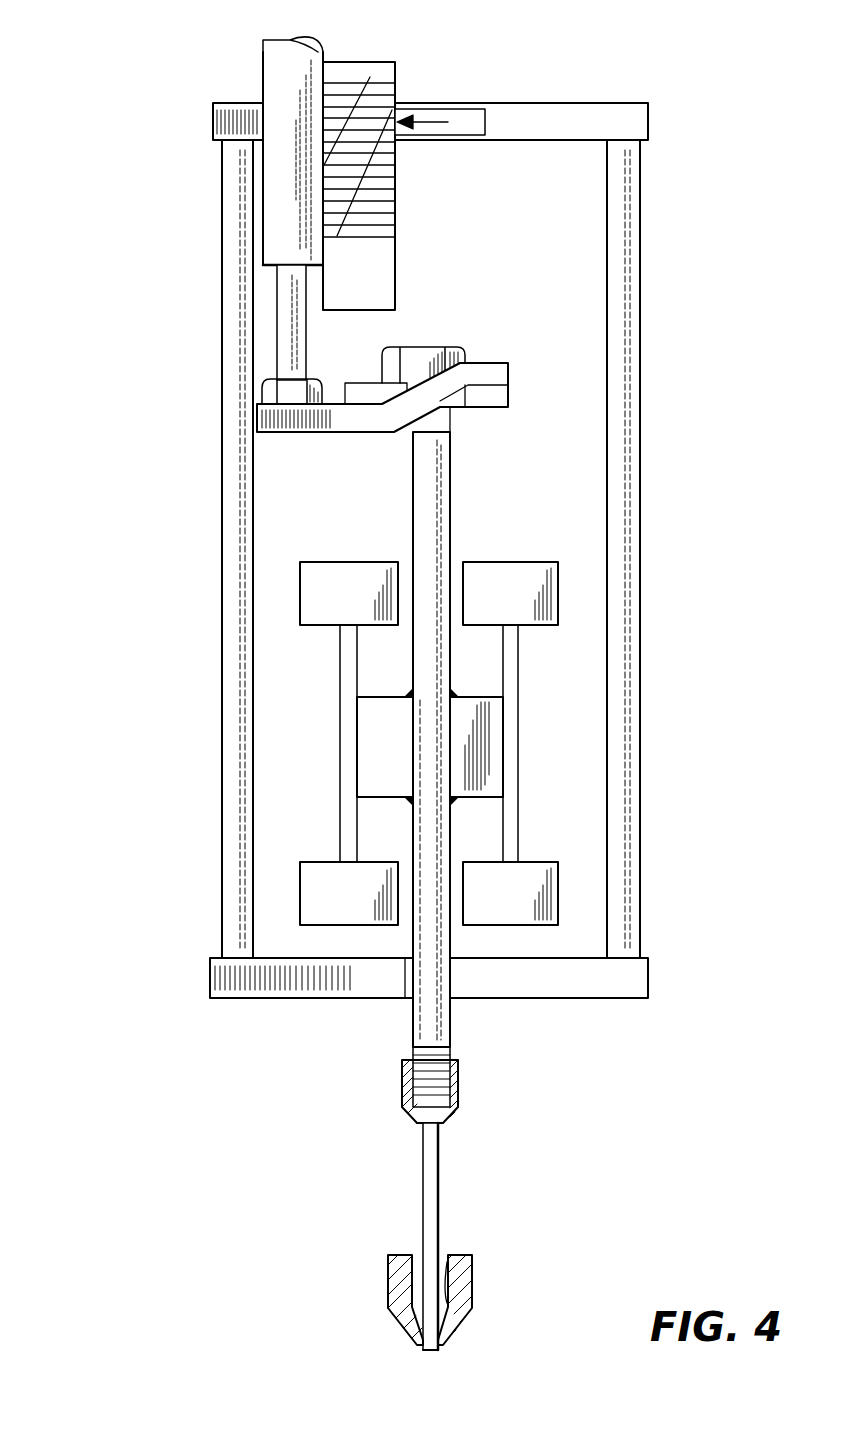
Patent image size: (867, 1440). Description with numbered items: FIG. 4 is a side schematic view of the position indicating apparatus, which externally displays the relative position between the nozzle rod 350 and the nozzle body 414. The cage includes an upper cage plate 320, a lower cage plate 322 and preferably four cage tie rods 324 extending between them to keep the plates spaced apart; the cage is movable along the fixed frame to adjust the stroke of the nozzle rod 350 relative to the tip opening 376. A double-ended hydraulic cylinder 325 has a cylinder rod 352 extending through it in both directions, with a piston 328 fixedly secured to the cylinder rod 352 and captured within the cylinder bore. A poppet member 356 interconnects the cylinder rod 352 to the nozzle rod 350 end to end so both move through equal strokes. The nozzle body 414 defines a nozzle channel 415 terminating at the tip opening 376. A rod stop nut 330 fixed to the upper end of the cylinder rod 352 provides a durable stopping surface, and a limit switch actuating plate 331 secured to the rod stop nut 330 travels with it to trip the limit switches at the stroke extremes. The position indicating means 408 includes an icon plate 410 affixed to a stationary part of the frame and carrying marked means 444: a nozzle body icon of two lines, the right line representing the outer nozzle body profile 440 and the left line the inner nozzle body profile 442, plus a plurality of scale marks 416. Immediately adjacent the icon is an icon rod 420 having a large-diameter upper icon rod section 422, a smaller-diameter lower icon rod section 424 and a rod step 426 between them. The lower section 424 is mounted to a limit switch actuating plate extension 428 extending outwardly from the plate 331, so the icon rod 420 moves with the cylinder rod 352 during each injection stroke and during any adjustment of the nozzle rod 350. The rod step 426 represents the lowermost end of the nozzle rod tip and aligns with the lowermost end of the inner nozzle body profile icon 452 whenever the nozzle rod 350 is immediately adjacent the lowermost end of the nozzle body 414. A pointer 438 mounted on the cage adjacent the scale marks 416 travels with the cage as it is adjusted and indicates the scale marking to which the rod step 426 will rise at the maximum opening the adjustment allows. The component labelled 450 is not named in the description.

The upper cage plate 320 is at (559, 134).
The lower cage plate 322 is at (526, 990).
The cage tie rods 324 is at (228, 617).
The hydraulic cylinder means 325 is at (530, 568).
The piston means 328 is at (490, 725).
The rod stop nut 330 is at (433, 342).
The limit switch actuating plate 331 is at (492, 402).
The nozzle rod 350 is at (423, 1197).
The cylinder rod 352 is at (417, 463).
The poppet member 356 is at (460, 1073).
The nozzle tip opening 376 is at (430, 1352).
The position indicating means 408 is at (190, 218).
The icon plate 410 is at (411, 155).
The nozzle body 414 is at (466, 1287).
The nozzle channel means 415 is at (417, 1280).
The scale marks 416 is at (447, 83).
The icon rod 420 is at (270, 173).
The upper icon rod section 422 is at (347, 90).
The lower icon rod section 424 is at (227, 334).
The rod step 426 is at (265, 268).
The limit switch actuating plate extension 428 is at (485, 367).
The pointer means 438 is at (487, 110).
The outer nozzle body profile 440 is at (465, 1328).
The inner nozzle body profile 442 is at (447, 1303).
The marked means 444 is at (427, 193).
The cylinder top 450 is at (268, 90).
The inner nozzle body profile icon 452 is at (338, 237).